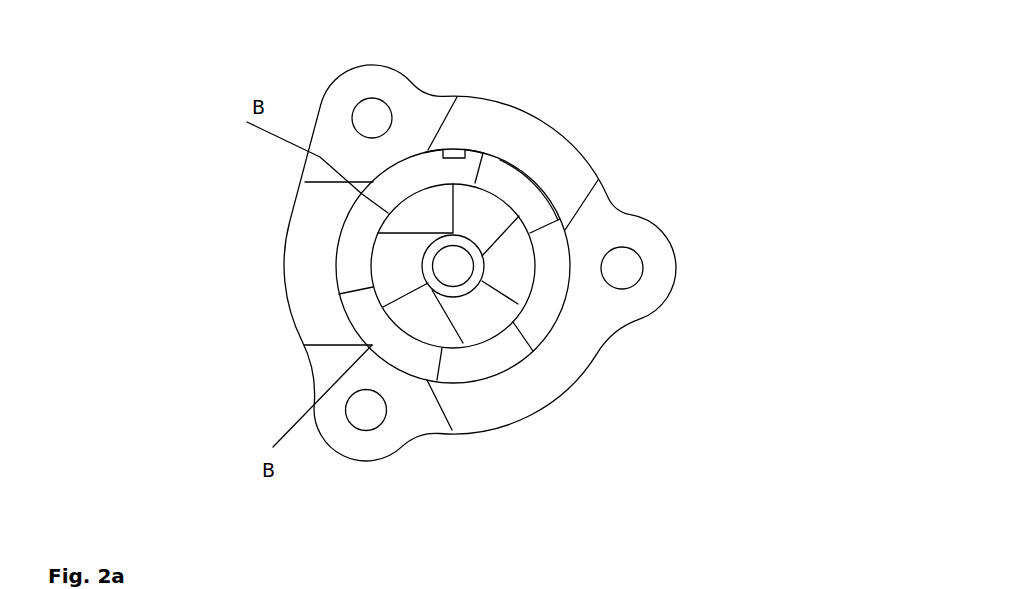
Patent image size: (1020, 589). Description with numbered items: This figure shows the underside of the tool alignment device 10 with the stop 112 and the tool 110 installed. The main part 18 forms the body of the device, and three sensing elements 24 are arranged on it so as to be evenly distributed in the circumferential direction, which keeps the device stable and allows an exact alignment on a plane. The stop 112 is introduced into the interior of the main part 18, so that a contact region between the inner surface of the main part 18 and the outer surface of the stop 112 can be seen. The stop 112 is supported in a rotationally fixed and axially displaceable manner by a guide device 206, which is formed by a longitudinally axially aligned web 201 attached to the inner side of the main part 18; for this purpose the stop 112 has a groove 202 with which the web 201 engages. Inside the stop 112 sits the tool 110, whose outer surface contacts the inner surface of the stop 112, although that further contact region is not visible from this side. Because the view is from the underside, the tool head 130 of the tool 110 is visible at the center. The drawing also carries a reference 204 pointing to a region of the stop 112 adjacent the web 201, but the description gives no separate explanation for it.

The tool alignment device 10 is at (803, 72).
The main part 18 is at (315, 330).
The sensing elements 24 is at (372, 113).
The tool 110 is at (453, 268).
The stop 112 is at (545, 308).
The tool head 130 is at (480, 381).
The web 201 is at (462, 148).
The groove 202 is at (438, 159).
The ring segment 204 is at (534, 201).
The guide device 206 is at (470, 146).